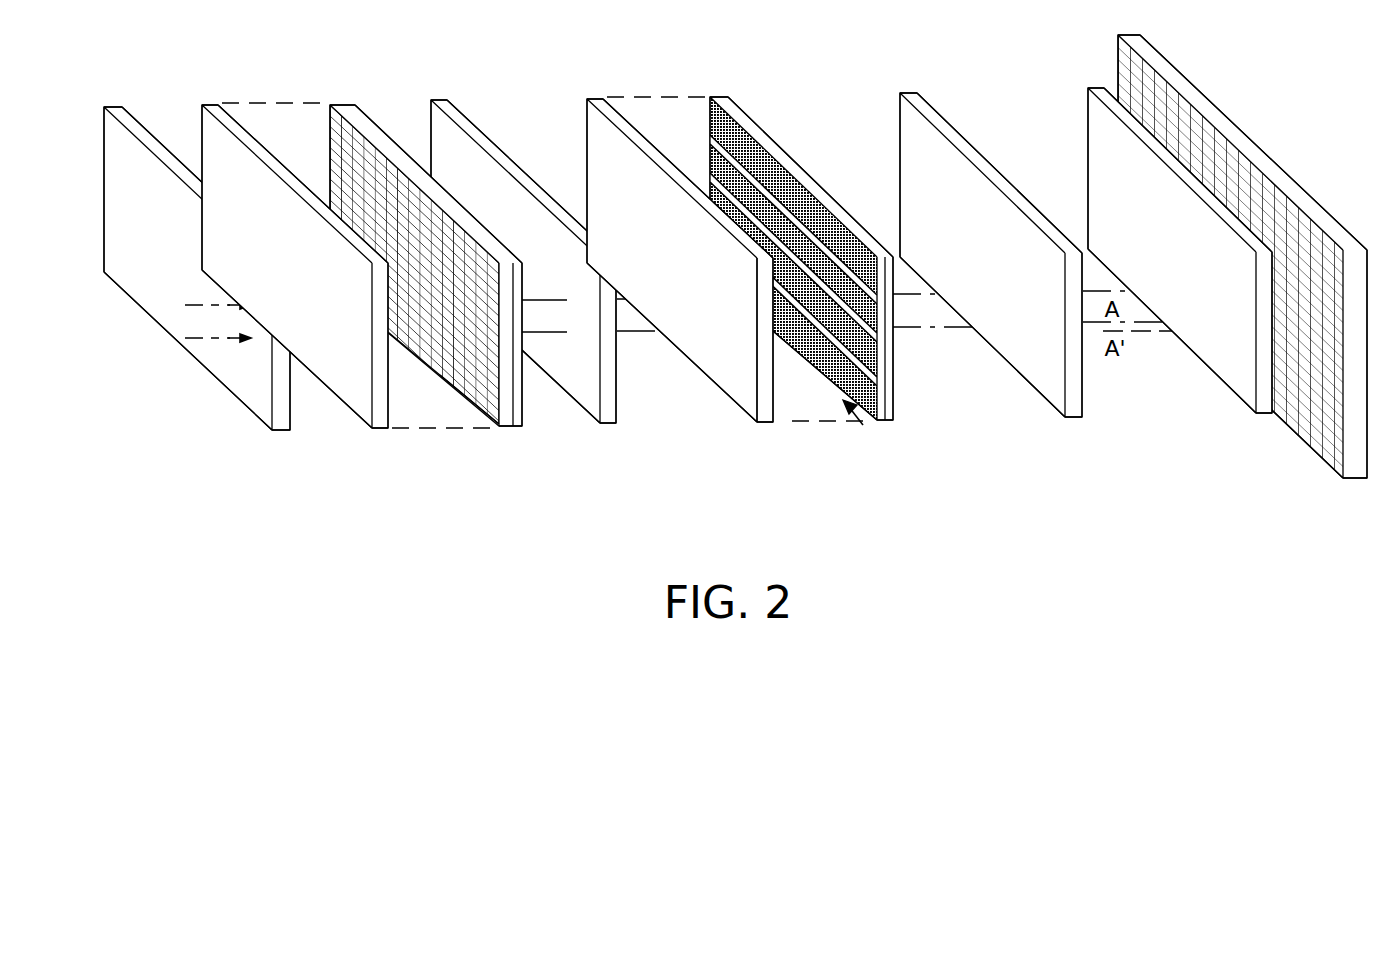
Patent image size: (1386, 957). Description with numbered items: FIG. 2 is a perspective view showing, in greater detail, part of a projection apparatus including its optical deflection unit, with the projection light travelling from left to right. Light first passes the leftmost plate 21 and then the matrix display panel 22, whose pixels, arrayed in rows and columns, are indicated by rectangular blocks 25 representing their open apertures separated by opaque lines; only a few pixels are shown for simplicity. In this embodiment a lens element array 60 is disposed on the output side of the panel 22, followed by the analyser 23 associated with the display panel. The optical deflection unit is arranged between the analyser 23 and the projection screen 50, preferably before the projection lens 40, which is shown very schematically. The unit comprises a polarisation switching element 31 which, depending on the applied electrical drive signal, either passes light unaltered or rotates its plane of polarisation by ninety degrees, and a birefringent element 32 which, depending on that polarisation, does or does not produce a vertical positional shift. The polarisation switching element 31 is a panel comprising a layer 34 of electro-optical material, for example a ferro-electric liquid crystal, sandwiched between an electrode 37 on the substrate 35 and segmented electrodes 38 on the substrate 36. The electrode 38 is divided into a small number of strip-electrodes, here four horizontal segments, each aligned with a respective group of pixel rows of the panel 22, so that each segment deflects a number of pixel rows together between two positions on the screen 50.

The first polarizer plate 21 is at (273, 431).
The display panel 22 is at (454, 463).
The rectangular blocks 25 is at (500, 425).
The lens element array 60 is at (522, 428).
The analyser 23 is at (617, 425).
The polarisation switching element 31 is at (817, 461).
The substrate 35 is at (757, 414).
The electrode 37 is at (772, 408).
The layer of electro-optical material 34 is at (863, 425).
The substrate 36 is at (888, 353).
The segmented electrodes 38 is at (876, 394).
The birefringent element 32 is at (1073, 418).
The projection lens 40 is at (1258, 415).
The projection screen 50 is at (1345, 482).